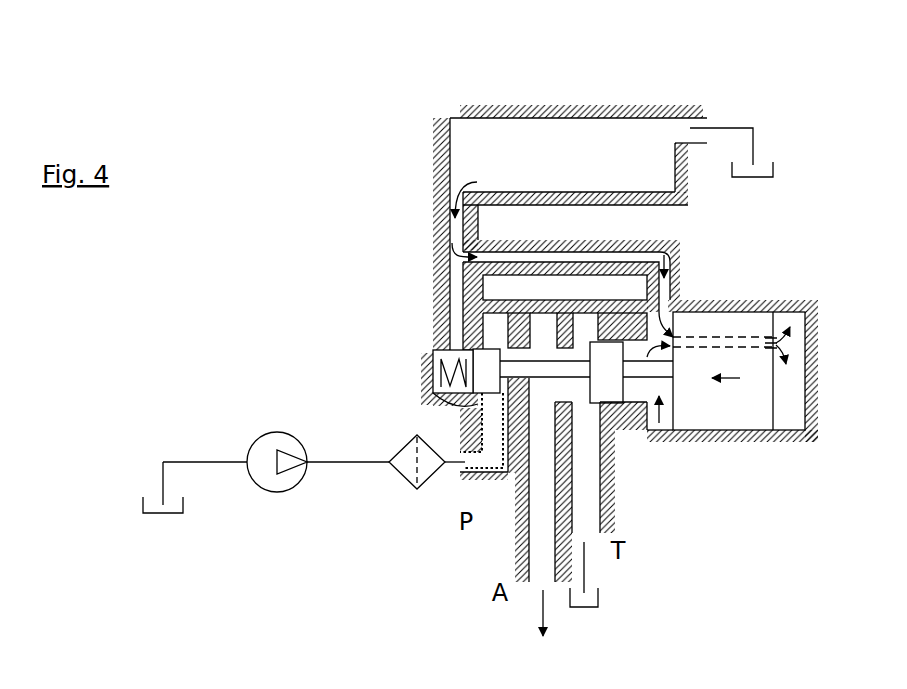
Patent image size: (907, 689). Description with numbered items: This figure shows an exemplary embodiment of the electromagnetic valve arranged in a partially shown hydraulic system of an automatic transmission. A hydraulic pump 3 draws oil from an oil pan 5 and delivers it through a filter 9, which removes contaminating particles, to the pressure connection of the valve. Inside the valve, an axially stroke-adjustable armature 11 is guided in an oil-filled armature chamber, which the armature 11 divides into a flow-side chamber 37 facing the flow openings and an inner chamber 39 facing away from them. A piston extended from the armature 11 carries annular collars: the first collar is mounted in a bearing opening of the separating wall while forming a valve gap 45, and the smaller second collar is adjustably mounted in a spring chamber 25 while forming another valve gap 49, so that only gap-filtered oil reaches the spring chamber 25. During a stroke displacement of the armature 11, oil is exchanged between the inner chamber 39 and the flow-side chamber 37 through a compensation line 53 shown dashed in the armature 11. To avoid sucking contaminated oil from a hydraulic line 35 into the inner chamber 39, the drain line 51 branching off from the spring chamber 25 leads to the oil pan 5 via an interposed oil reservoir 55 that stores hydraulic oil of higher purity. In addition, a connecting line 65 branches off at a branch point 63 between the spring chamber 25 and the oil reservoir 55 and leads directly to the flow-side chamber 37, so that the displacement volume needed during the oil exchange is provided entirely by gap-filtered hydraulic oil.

The hydraulic pump 3 is at (285, 492).
The oil pan 5 is at (172, 513).
The filter 9 is at (400, 478).
The armature 11 is at (763, 322).
The spring chamber 25 is at (431, 357).
The hydraulic line 35 is at (470, 440).
The flow-side chamber 37 is at (662, 432).
The inner chamber 39 is at (790, 385).
The valve gap 45 is at (612, 403).
The valve gap 49 is at (477, 401).
The drain line 51 is at (446, 288).
The compensation line 53 is at (722, 336).
The oil reservoir 55 is at (615, 145).
The branch point 63 is at (448, 242).
The connecting line 65 is at (572, 250).